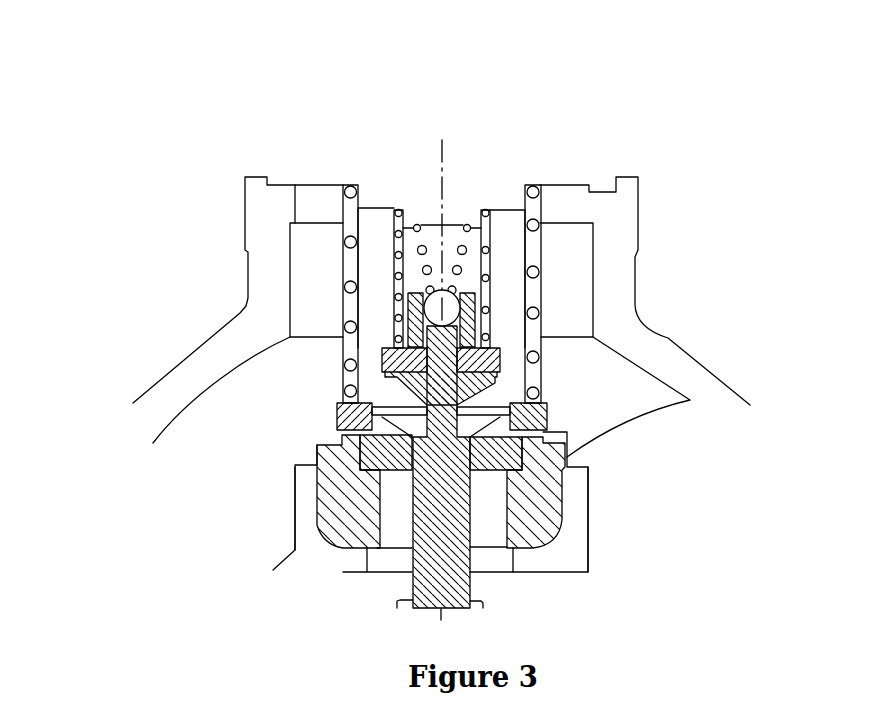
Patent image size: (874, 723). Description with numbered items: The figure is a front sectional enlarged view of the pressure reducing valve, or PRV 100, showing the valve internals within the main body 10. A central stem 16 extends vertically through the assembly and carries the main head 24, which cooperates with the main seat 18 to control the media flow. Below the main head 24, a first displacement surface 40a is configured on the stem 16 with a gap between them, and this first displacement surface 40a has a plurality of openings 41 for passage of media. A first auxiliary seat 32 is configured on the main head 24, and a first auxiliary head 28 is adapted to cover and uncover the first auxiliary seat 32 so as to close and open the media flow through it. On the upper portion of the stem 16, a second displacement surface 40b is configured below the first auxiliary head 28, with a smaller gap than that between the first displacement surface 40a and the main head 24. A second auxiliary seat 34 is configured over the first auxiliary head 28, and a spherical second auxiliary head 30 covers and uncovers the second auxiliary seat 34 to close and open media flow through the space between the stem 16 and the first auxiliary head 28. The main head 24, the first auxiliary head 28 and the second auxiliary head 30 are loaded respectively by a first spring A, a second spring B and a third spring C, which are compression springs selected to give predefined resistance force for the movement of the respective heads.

The pressure reducing valve 100 is at (625, 90).
The main body 10 is at (692, 293).
The stem 16 is at (578, 508).
The main seat 18 is at (560, 472).
The main head 24 is at (545, 420).
The first auxiliary head 28 is at (406, 312).
The second auxiliary head 30 is at (452, 291).
The first auxiliary seat 32 is at (497, 382).
The second auxiliary seat 34 is at (476, 312).
The first displacement surface 40a is at (338, 403).
The second displacement surface 40b is at (382, 360).
The openings 41 is at (412, 472).
The first spring A is at (345, 185).
The second spring B is at (398, 207).
The third spring C is at (470, 213).